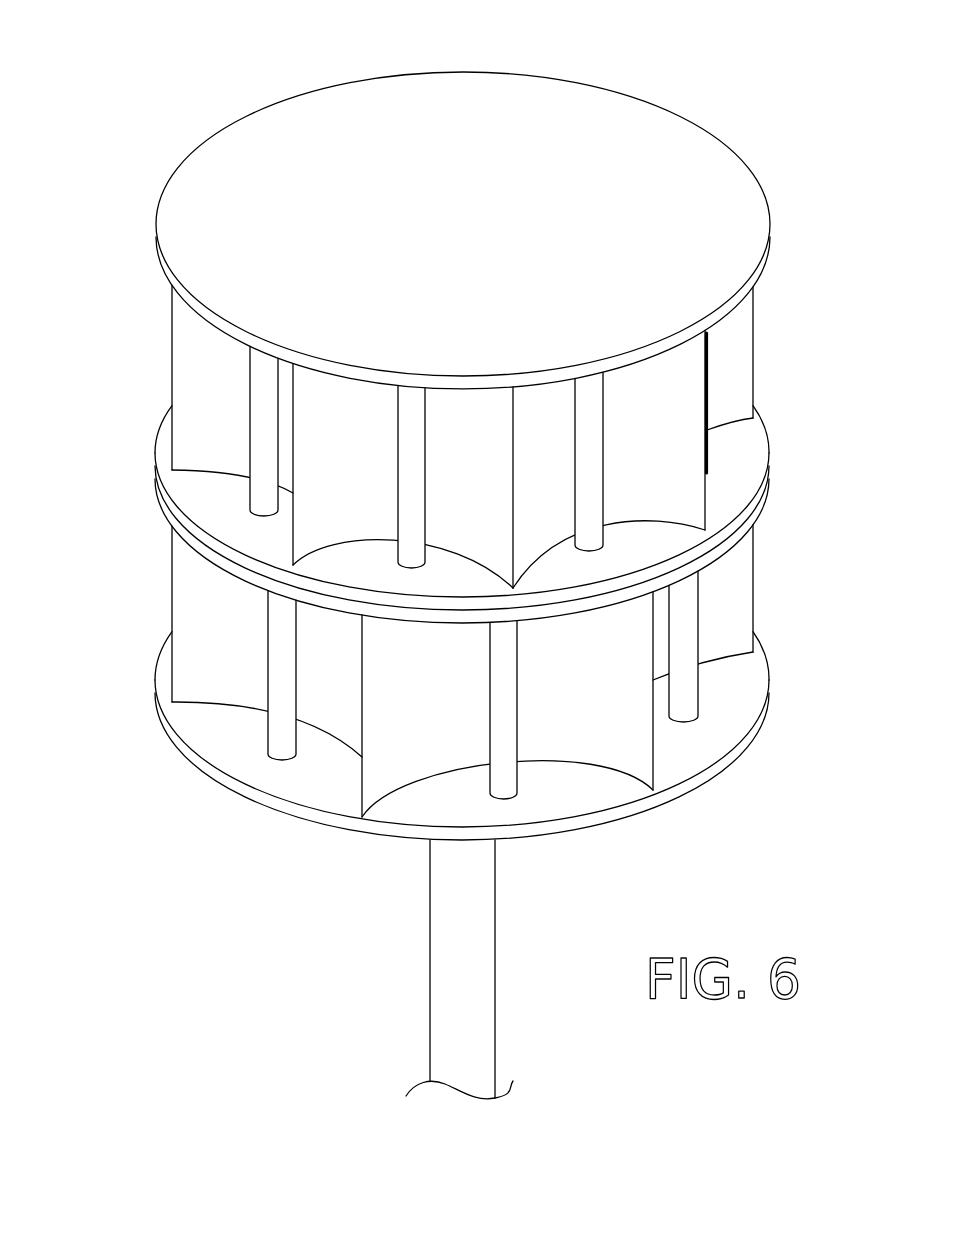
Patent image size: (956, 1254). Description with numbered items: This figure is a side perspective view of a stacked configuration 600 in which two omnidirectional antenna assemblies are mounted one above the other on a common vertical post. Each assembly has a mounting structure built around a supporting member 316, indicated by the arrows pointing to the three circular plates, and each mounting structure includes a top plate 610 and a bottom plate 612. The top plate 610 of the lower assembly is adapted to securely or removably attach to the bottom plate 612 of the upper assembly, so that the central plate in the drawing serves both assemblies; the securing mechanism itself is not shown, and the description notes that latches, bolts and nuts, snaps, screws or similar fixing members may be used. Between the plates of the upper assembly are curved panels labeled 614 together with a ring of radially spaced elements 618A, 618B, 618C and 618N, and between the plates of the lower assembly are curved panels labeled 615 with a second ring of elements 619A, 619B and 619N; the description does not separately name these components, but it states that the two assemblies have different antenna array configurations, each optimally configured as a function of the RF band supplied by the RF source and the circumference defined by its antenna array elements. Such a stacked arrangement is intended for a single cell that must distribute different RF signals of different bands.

The stacked configuration 600 is at (120, 79).
The supporting member 316 is at (152, 649).
The top plate 610 is at (713, 153).
The bottom plate 612 is at (753, 445).
The upper set of curved vanes 614 is at (196, 355).
The lower set of curved vanes 615 is at (196, 591).
The upper support post 618A is at (262, 413).
The upper support post 618B is at (407, 452).
The upper support post 618C is at (594, 438).
The upper support post 618N is at (708, 358).
The lower support post 619A is at (277, 657).
The lower support post 619B is at (500, 688).
The lower support post 619N is at (698, 588).